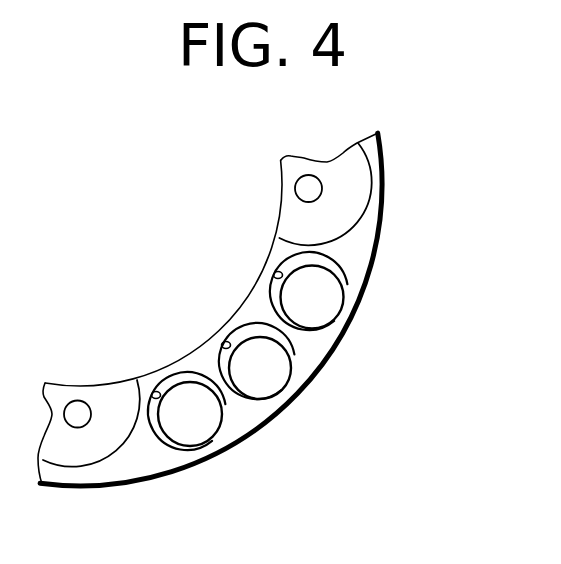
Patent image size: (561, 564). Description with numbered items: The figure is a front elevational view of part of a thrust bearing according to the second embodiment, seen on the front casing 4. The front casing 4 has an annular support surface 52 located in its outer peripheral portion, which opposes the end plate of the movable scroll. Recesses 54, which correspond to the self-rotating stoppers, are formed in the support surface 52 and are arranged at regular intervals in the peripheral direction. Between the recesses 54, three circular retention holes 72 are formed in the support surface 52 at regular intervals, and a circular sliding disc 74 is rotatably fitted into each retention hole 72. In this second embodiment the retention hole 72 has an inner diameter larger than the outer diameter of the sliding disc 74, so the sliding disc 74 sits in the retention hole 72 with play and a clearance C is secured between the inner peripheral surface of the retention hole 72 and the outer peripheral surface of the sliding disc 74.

The front casing 4 is at (385, 186).
The support surface 52 is at (352, 245).
The recesses 54 is at (292, 208).
The retention holes 72 is at (268, 278).
The sliding disc 74 is at (322, 299).
The clearance C is at (282, 243).